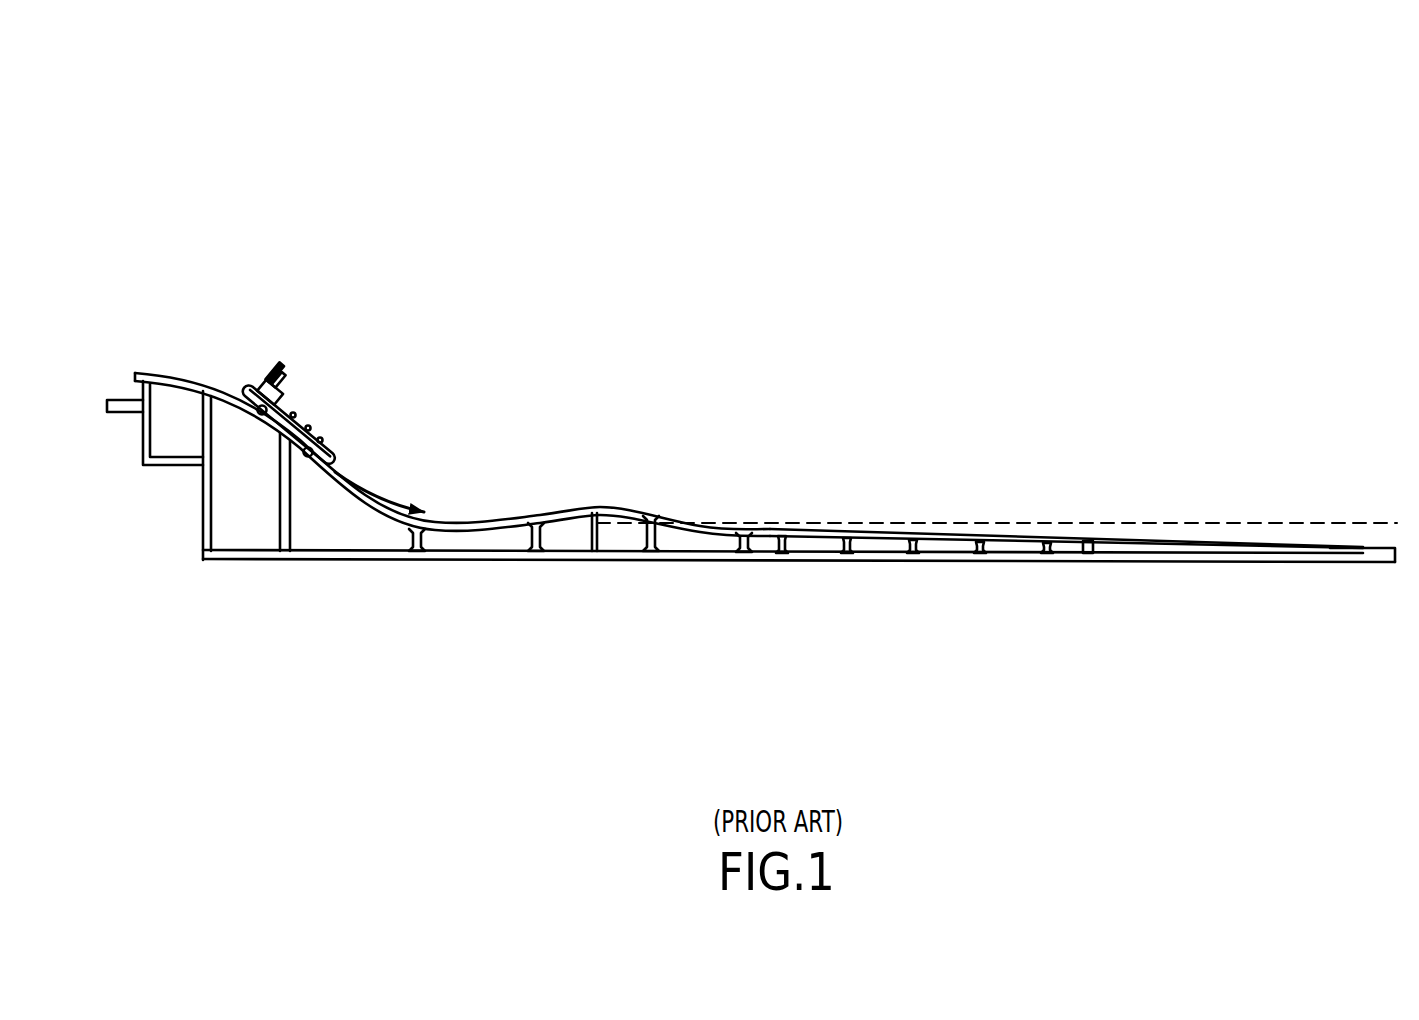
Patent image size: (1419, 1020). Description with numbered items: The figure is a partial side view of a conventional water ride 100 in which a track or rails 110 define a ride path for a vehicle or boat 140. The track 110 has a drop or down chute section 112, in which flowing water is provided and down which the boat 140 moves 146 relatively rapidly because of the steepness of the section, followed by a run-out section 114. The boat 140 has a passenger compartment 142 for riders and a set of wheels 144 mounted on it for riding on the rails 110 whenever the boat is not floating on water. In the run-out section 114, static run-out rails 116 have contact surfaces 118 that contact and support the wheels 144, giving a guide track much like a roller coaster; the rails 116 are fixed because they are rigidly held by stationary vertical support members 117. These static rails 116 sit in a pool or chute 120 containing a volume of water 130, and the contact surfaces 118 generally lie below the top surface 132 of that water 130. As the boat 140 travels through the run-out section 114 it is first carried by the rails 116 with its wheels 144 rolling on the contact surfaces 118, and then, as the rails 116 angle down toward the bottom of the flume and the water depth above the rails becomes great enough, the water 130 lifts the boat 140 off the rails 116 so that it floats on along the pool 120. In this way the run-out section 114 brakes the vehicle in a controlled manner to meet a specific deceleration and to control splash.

The water ride 100 is at (1108, 138).
The track or rails 110 is at (164, 372).
The drop or down chute section 112 is at (753, 306).
The run-out section 114 is at (1325, 393).
The static run-out rails 116 is at (762, 545).
The support brackets 117 is at (978, 549).
The contact surfaces 118 is at (828, 524).
The pool or chute 120 is at (1105, 545).
The water 130 is at (1354, 531).
The top surface of the water 132 is at (1082, 520).
The vehicle or boat 140 is at (316, 425).
The passenger compartment 142 is at (257, 406).
The wheels 144 is at (260, 412).
The movement of vehicle down the drop 146 is at (440, 453).